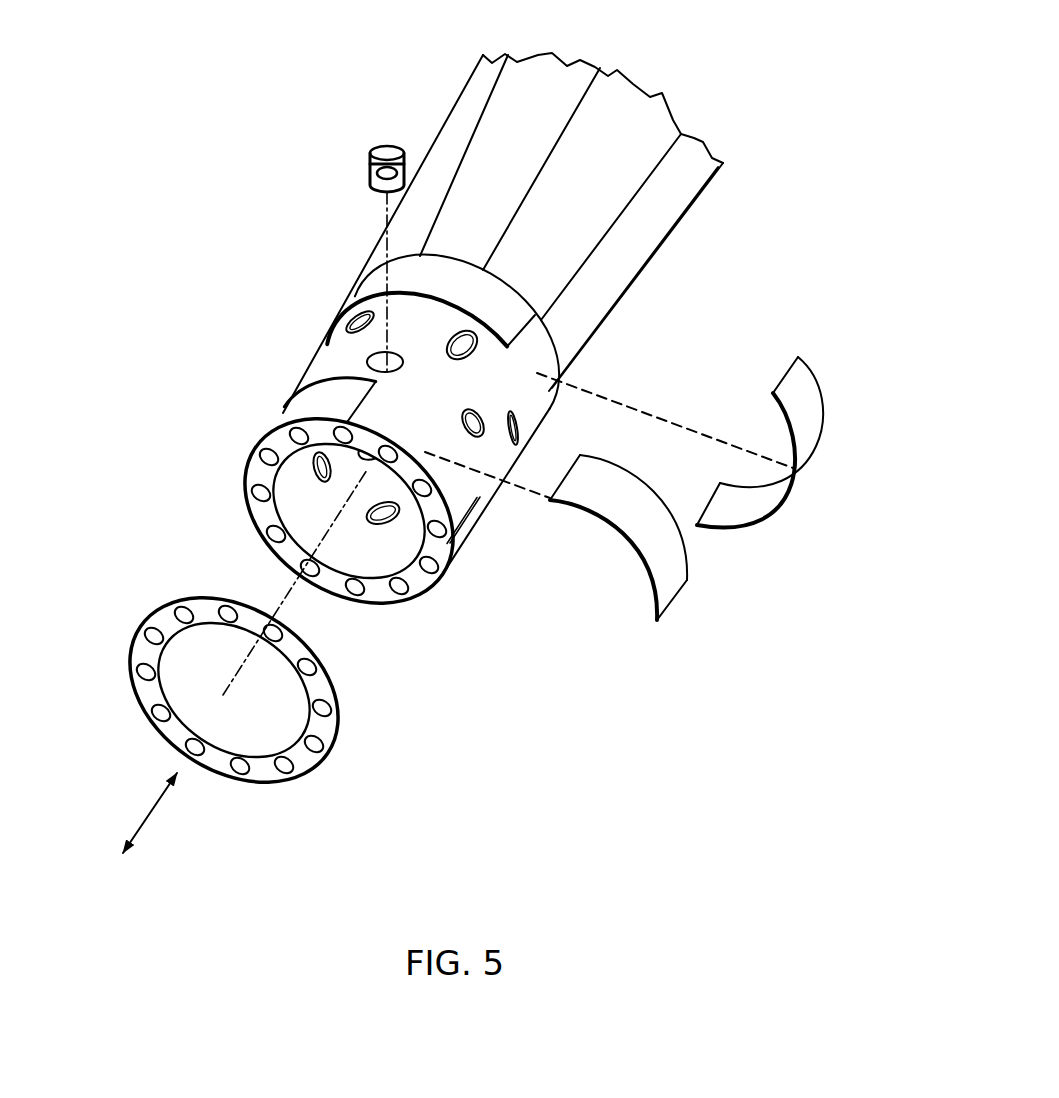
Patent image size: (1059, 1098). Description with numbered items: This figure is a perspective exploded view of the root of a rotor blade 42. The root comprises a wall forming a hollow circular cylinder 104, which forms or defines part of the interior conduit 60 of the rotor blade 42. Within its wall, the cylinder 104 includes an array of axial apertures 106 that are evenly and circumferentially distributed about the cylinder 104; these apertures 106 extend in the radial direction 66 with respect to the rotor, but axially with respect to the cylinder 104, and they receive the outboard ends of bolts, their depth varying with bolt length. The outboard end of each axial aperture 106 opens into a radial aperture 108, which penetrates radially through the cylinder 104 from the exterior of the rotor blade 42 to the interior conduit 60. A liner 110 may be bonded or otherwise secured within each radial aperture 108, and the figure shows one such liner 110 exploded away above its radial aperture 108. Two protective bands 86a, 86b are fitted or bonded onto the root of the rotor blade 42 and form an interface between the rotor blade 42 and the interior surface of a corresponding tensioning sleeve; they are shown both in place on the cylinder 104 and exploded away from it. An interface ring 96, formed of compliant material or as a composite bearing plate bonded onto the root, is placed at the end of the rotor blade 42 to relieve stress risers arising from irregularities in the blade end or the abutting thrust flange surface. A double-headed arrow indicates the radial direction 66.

The rotor blade 42 is at (495, 137).
The liner 110 is at (370, 150).
The protective band 86b is at (372, 293).
The protective band 86a is at (288, 413).
The radial aperture 108 is at (367, 363).
The hollow circular cylinder 104 is at (237, 475).
The axial apertures 106 is at (348, 605).
The interior conduit 60 is at (270, 510).
The interface ring 96 is at (330, 753).
The radial direction 66 is at (153, 813).